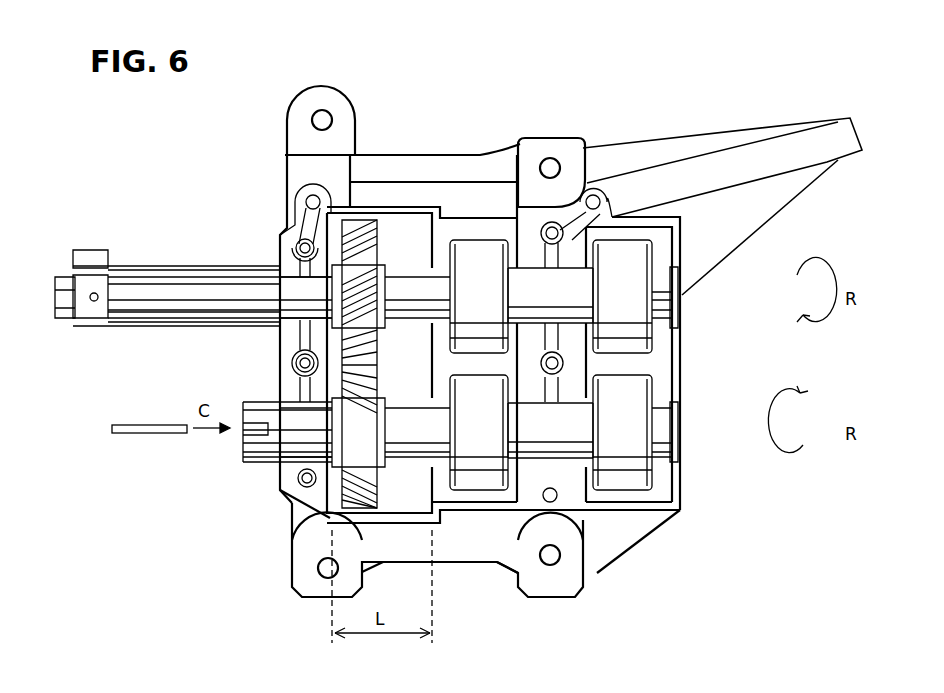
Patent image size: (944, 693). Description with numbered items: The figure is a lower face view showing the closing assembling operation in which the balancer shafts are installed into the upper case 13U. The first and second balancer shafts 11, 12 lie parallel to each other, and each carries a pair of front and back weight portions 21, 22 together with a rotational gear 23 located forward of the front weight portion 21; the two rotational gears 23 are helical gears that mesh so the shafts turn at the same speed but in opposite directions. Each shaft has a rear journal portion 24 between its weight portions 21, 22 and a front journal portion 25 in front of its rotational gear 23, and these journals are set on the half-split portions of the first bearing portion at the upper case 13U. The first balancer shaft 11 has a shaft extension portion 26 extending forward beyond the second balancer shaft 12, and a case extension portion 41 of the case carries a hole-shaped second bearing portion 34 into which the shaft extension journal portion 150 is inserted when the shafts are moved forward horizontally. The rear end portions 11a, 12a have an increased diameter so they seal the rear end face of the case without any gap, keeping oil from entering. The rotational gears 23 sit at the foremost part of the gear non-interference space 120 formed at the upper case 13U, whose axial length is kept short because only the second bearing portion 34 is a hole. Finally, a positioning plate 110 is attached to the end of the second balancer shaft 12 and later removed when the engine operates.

The first balancer shaft 11 is at (240, 277).
The rear end portion of first balancer shaft 11a is at (675, 310).
The second balancer shaft 12 is at (245, 447).
The rear end portion of second balancer shaft 12a is at (675, 432).
The upper case 13U is at (598, 138).
The front weight portion 21 is at (483, 483).
The back weight portion 22 is at (640, 475).
The rotational gear 23 is at (375, 380).
The rear journal portion 24 is at (562, 447).
The front journal portion 25 is at (295, 445).
The shaft extension portion 26 is at (173, 288).
The second bearing portion 34 is at (73, 322).
The case extension portion 41 is at (137, 325).
The positioning plate 110 is at (132, 430).
The gear non-interference space 120 is at (387, 232).
The shaft extension journal portion 150 is at (68, 280).